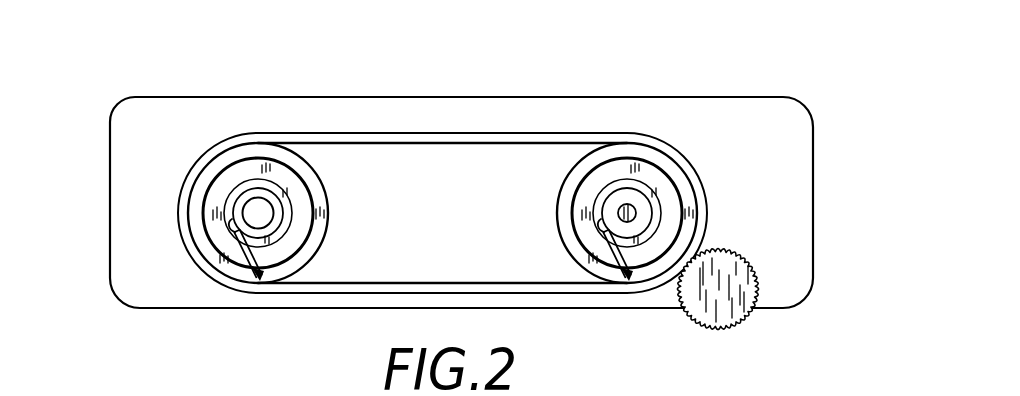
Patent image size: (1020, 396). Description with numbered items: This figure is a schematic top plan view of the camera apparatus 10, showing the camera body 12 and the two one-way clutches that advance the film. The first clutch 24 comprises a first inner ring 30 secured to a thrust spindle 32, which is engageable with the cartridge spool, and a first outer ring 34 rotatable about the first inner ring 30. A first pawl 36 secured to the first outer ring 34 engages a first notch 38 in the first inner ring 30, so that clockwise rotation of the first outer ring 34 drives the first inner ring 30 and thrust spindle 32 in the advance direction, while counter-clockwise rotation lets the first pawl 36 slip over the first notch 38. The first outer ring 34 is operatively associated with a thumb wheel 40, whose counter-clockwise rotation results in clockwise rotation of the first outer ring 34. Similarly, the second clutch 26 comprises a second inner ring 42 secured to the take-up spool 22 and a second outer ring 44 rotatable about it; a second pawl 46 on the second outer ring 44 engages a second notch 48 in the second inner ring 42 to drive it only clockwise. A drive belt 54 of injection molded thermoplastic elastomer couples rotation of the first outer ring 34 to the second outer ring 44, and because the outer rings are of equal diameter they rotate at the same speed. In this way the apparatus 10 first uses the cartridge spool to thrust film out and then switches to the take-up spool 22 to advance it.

The apparatus 10 is at (840, 208).
The camera body 12 is at (128, 99).
The take-up spool 22 is at (285, 206).
The first clutch 24 is at (539, 201).
The second clutch 26 is at (345, 226).
The first inner ring 30 is at (636, 205).
The thrust spindle 32 is at (647, 208).
The first outer ring 34 is at (578, 168).
The first pawl 36 is at (614, 251).
The first notch 38 is at (601, 229).
The thumb wheel 40 is at (722, 330).
The second inner ring 42 is at (230, 188).
The second outer ring 44 is at (313, 162).
The second pawl 46 is at (240, 252).
The second notch 48 is at (232, 224).
The drive belt 54 is at (426, 133).